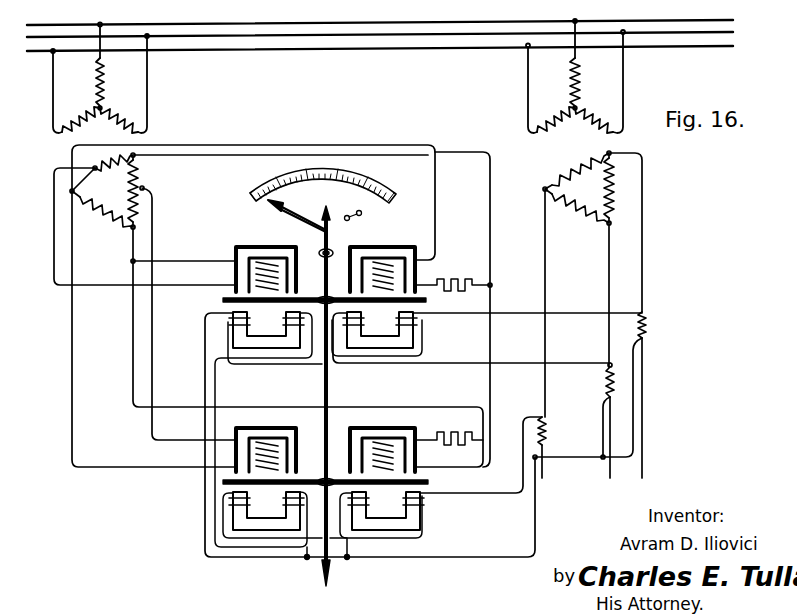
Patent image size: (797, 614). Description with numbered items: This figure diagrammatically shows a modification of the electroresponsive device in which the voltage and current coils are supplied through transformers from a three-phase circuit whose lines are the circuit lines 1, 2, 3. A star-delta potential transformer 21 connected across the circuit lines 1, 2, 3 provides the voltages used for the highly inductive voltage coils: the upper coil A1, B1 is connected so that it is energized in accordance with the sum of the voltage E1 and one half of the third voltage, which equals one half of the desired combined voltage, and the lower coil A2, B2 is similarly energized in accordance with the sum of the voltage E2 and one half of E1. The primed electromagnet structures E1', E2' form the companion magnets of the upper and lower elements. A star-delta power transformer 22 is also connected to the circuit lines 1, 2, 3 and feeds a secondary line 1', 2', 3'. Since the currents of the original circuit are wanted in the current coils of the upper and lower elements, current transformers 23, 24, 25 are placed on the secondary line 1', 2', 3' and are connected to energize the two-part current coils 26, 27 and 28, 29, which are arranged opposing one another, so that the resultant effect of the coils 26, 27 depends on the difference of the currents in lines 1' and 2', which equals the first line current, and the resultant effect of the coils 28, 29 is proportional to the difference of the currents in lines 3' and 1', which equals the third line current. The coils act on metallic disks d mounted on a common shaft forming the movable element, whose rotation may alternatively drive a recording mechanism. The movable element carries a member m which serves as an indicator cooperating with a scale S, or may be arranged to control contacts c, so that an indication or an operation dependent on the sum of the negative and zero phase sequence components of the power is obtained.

The circuit line 1 is at (380, 13).
The circuit line 2 is at (380, 21).
The circuit line 3 is at (380, 59).
The star-delta potential transformer 21 is at (106, 138).
The star-delta power transformer 22 is at (578, 138).
The current transformer 23 is at (647, 325).
The current transformer 24 is at (606, 372).
The current transformer 25 is at (547, 432).
The current coil part 26 is at (285, 322).
The current coil part 27 is at (233, 320).
The current coil part 28 is at (285, 503).
The current coil part 29 is at (233, 503).
The secondary line 1' is at (601, 315).
The secondary line 2' is at (598, 351).
The secondary line 3' is at (555, 334).
The scale S is at (383, 178).
The member m is at (296, 215).
The contacts c is at (360, 216).
The metallic disk d is at (307, 298).
The voltage E1 is at (252, 354).
The voltage E1' is at (420, 350).
The voltage E2 is at (268, 436).
The voltage E2' is at (376, 436).
The voltage coil terminal A1 is at (271, 269).
The voltage coil terminal B1 is at (271, 287).
The voltage coil terminal A2 is at (271, 449).
The voltage coil terminal B2 is at (271, 467).